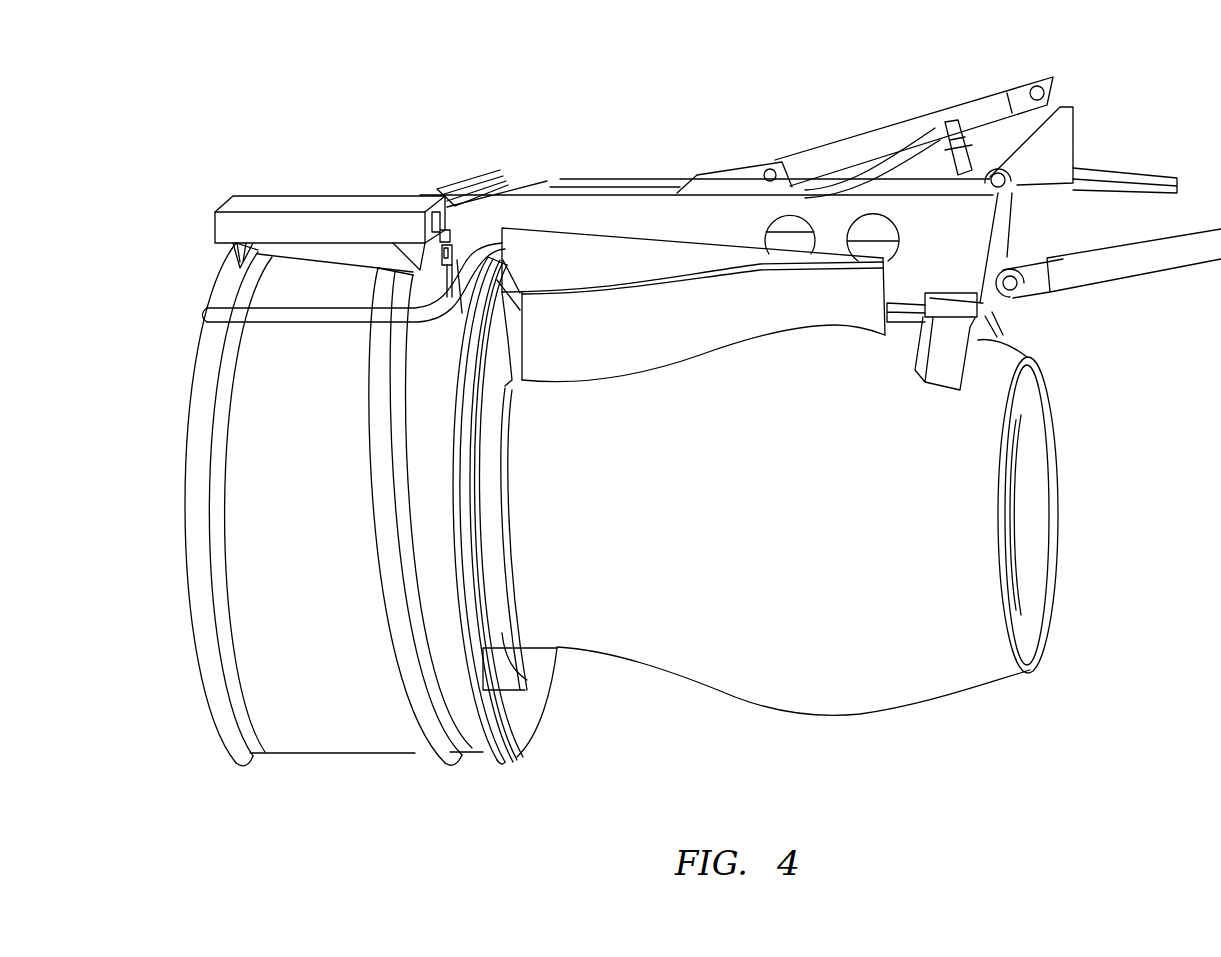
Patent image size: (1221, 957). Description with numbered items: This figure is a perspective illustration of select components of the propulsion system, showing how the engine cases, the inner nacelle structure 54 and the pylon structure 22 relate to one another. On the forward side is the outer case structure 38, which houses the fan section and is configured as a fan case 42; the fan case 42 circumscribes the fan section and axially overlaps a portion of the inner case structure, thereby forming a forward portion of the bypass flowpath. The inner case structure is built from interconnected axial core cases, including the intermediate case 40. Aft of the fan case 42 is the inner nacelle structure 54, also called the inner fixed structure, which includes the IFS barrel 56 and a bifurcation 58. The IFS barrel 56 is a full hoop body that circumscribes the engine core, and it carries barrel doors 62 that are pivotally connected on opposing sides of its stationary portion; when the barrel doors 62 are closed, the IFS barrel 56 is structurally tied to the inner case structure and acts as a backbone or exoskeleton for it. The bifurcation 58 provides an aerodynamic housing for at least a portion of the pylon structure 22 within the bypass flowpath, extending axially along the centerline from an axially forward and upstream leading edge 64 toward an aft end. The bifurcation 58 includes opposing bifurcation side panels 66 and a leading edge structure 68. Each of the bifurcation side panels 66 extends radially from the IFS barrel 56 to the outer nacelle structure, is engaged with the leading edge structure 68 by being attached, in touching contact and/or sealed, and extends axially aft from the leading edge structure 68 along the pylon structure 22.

The pylon structure 22 is at (893, 119).
The outer case structure 38 is at (334, 543).
The fan case 42 is at (287, 755).
The intermediate case 40 is at (527, 680).
The leading edge structure 68 is at (470, 338).
The leading edge 64 is at (487, 258).
The bifurcation 58 is at (566, 316).
The bifurcation side panels 66 is at (711, 317).
The inner nacelle structure 54 is at (860, 728).
The barrel doors 62 is at (1058, 448).
The IFS barrel 56 is at (994, 646).